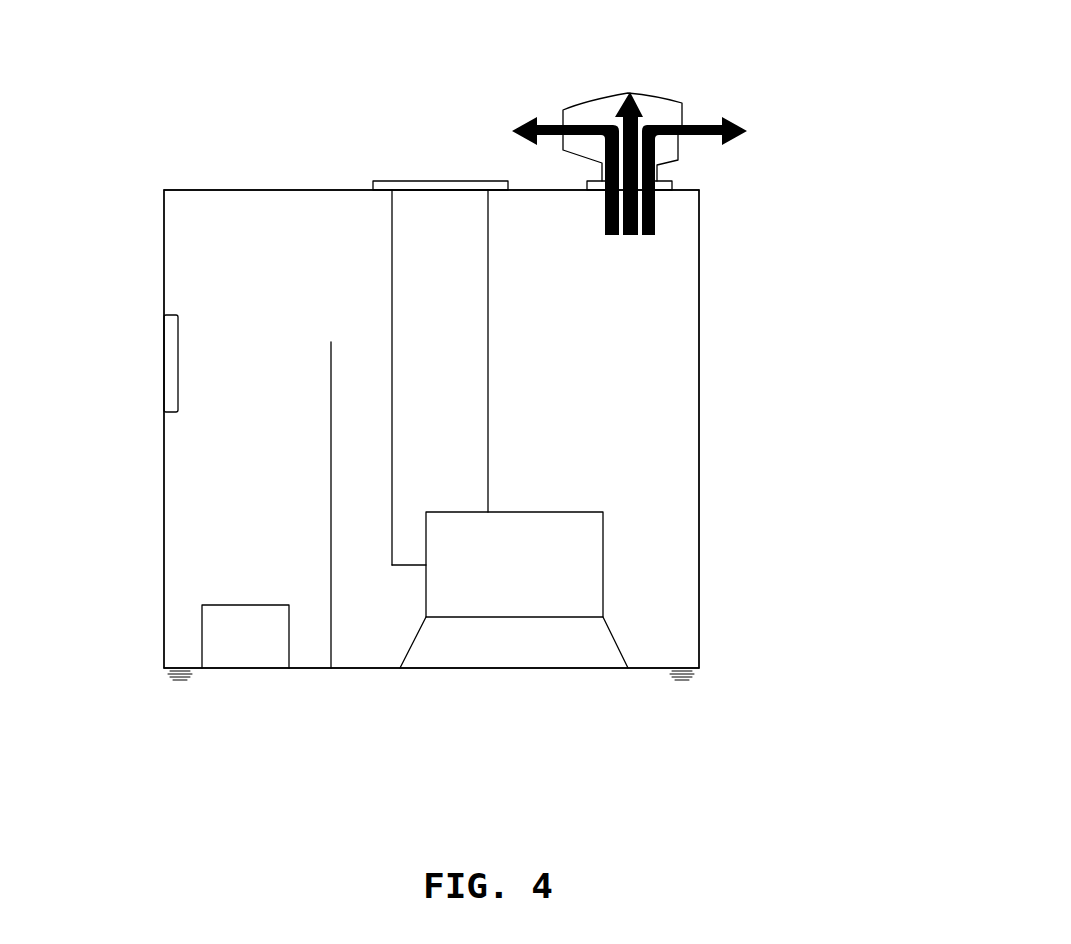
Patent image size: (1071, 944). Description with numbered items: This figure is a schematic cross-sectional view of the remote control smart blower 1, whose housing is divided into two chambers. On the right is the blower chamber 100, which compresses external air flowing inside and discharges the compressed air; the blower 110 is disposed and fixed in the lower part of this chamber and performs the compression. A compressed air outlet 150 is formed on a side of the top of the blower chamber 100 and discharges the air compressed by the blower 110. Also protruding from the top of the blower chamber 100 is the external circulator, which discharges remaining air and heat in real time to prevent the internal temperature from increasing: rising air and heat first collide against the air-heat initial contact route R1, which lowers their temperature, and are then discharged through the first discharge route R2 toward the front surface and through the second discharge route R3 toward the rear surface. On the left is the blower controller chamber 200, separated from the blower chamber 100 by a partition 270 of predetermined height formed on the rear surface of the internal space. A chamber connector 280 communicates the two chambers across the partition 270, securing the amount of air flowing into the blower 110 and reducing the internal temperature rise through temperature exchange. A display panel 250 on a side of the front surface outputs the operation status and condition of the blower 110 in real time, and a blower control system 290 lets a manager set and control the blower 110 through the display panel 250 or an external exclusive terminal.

The heat source system 1 is at (46, 42).
The blower chamber 100 is at (736, 368).
The blower 110 is at (603, 552).
The compressed air outlet 150 is at (438, 181).
The blower controller chamber 200 is at (222, 167).
The display panel 250 is at (171, 377).
The partition 270 is at (330, 503).
The chamber connector 280 is at (331, 249).
The blower control system 290 is at (249, 643).
The air-heat initial contact route R1 is at (624, 92).
The first discharge route R2 is at (545, 122).
The second discharge route R3 is at (701, 122).